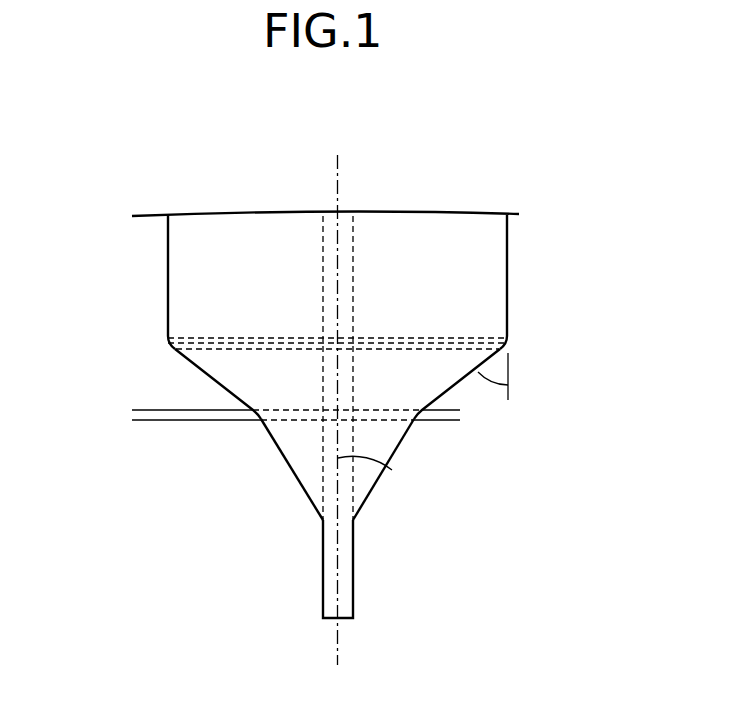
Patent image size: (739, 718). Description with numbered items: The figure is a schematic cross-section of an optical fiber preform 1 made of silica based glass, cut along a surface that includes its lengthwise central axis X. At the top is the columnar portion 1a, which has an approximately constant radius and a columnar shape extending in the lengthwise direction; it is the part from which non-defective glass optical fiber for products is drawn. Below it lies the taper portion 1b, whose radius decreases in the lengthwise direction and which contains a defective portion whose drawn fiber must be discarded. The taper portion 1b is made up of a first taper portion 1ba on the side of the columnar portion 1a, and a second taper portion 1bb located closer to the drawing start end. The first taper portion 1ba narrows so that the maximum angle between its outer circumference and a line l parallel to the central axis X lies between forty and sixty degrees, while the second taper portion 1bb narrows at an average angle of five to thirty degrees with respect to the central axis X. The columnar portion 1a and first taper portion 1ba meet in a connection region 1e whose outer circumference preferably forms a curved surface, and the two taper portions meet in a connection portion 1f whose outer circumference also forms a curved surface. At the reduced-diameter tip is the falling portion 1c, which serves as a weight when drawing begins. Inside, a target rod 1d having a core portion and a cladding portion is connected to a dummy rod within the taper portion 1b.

The optical fiber preform 1 is at (324, 399).
The columnar portion 1a is at (145, 216).
The taper portion 1b is at (267, 431).
The first taper portion 1ba is at (145, 343).
The second taper portion 1bb is at (323, 520).
The falling portion 1c is at (353, 568).
The target rod 1d is at (353, 240).
The connection region 1e is at (507, 349).
The connection portion 1f is at (448, 388).
The central axis X is at (336, 399).
The line parallel with the central axis l is at (511, 392).